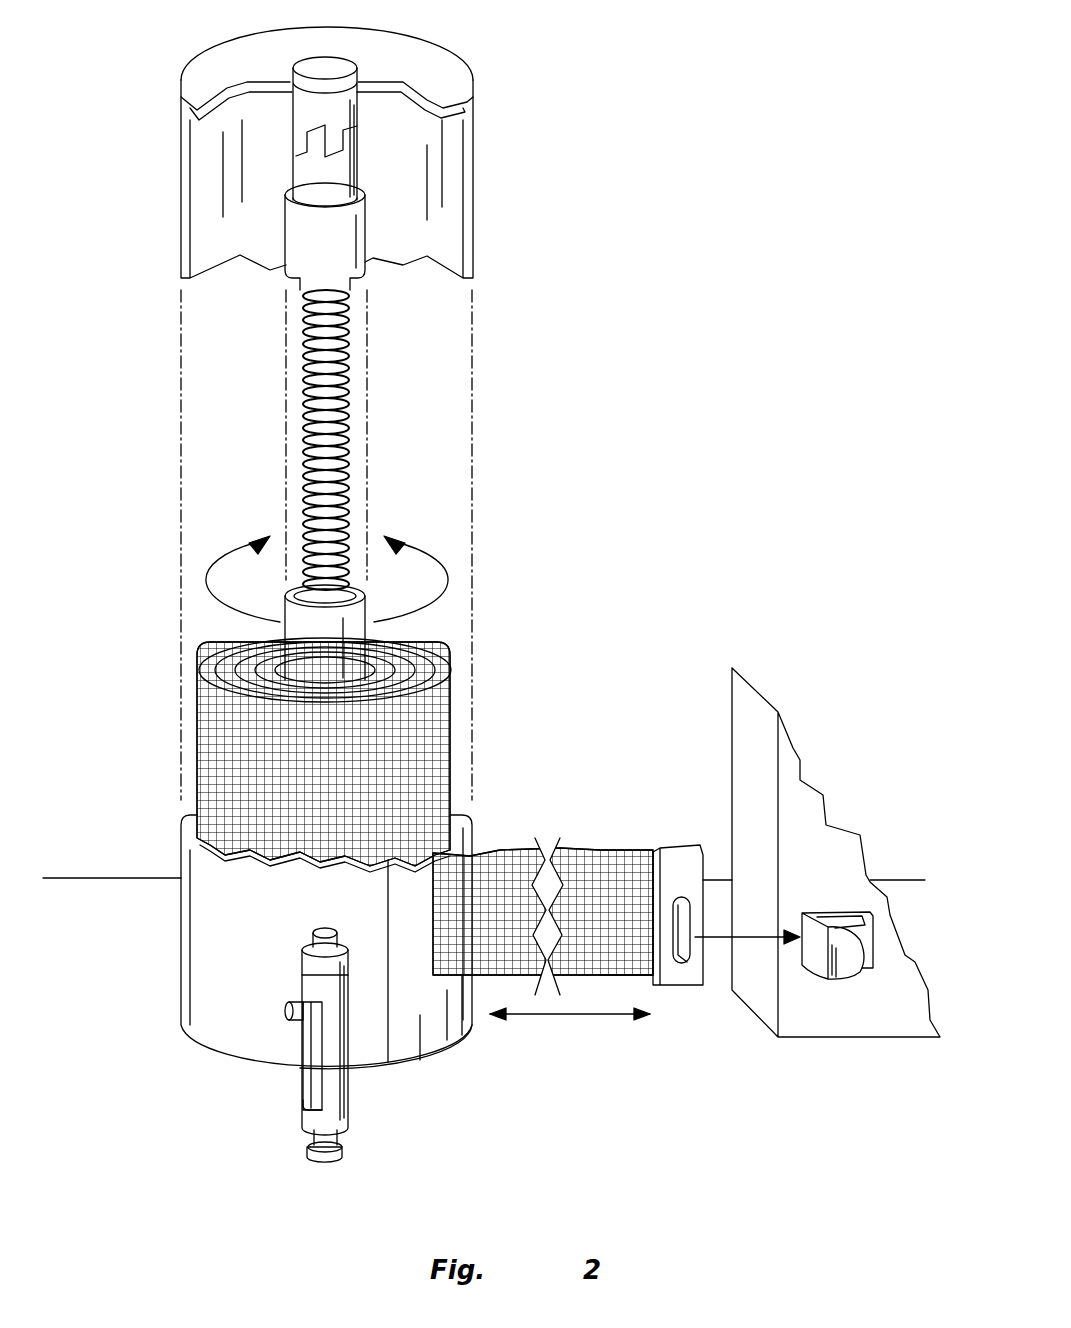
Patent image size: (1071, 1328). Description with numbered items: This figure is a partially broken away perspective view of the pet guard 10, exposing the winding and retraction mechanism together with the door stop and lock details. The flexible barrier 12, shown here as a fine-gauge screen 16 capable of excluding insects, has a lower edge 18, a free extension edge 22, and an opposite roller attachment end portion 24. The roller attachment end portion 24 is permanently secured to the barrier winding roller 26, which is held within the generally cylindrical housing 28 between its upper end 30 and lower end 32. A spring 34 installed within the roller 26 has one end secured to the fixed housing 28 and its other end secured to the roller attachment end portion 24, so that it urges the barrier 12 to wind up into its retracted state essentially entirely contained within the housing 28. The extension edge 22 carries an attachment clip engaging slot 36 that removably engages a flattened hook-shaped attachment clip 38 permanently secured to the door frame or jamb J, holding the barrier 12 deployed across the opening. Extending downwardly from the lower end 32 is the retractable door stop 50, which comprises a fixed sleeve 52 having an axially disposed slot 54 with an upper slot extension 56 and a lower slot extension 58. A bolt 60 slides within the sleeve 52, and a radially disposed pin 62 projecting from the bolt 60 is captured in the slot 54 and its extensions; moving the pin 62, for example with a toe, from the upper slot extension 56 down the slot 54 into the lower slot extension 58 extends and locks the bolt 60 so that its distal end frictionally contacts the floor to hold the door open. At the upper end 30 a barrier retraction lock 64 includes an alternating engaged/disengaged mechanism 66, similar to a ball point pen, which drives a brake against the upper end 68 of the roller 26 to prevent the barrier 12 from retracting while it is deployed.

The pet guard 10 is at (150, 1064).
The flexible barrier 12 is at (597, 850).
The screen 16 is at (260, 753).
The lower edge 18 is at (630, 976).
The extension edge 22 is at (676, 848).
The roller attachment end portion 24 is at (232, 648).
The barrier winding roller 26 is at (300, 270).
The housing 28 is at (180, 240).
The upper end 30 is at (205, 53).
The lower end 32 is at (455, 1050).
The spring 34 is at (303, 435).
The barrier extension edge attachment clip engaging slot 36 is at (683, 968).
The barrier extension edge attachment clip 38 is at (840, 980).
The retractable door stop 50 is at (226, 1152).
The fixed sleeve 52 is at (348, 965).
The axially disposed slot 54 is at (322, 1043).
The upper slot extension 56 is at (305, 985).
The lower slot extension 58 is at (303, 1105).
The bolt 60 is at (323, 930).
The radially disposed pin 62 is at (286, 1012).
The barrier retraction lock 64 is at (336, 70).
The alternating engaged/disengaged mechanism 66 is at (300, 153).
The upper end of the roller 68 is at (365, 185).
The jamb J is at (738, 726).